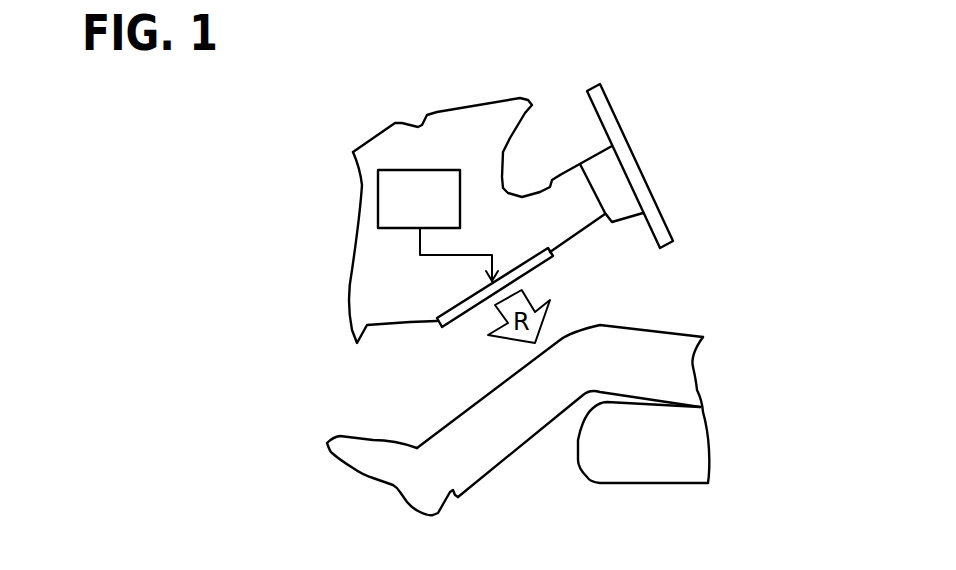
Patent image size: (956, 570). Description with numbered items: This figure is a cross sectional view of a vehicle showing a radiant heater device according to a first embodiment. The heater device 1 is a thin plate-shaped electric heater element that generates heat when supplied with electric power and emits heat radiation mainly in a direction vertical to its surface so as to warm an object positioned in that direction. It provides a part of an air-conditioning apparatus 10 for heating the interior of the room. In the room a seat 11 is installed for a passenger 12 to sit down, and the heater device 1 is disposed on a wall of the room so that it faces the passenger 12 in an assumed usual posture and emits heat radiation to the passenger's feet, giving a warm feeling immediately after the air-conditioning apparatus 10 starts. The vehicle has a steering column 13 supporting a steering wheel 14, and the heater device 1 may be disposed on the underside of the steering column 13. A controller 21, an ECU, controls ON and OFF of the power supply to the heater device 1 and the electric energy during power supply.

The heater device 1 is at (442, 328).
The air-conditioning apparatus 10 is at (722, 160).
The seat 11 is at (697, 435).
The passenger 12 is at (682, 335).
The steering column 13 is at (587, 235).
The steering wheel 14 is at (626, 138).
The controller (ECU) 21 is at (378, 192).